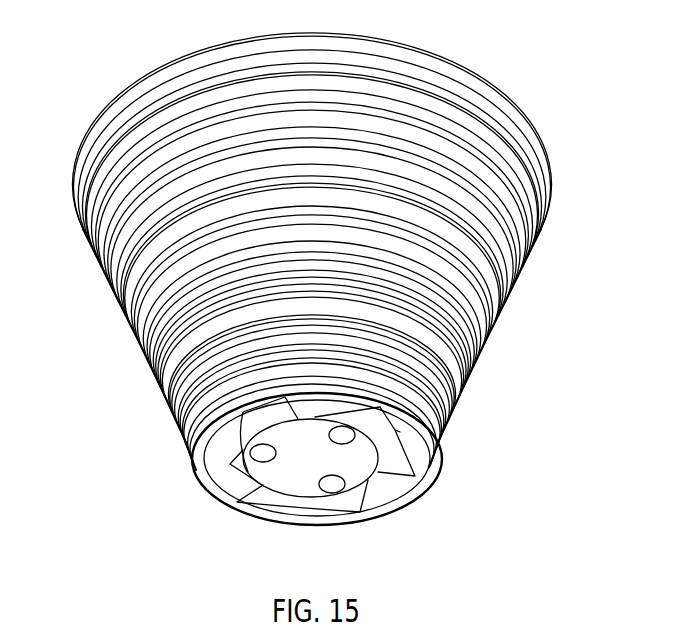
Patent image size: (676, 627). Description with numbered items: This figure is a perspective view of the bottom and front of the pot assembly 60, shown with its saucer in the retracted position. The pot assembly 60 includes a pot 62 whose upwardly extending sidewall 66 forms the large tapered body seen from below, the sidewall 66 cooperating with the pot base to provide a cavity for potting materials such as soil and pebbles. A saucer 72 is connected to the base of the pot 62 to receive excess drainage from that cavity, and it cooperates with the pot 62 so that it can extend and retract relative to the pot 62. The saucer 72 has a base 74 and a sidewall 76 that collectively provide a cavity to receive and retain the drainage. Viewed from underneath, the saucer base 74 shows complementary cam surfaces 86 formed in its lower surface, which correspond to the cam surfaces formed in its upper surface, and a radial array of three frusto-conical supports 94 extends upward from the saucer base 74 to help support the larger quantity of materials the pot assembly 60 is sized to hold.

The pot assembly 60 is at (540, 81).
The pot 62 is at (549, 149).
The sidewall 66 is at (485, 285).
The saucer 72 is at (441, 433).
The saucer base 74 is at (230, 478).
The saucer sidewall 76 is at (413, 398).
The complementary cam surface 86 is at (415, 472).
The frusto-conical supports 94 is at (262, 457).